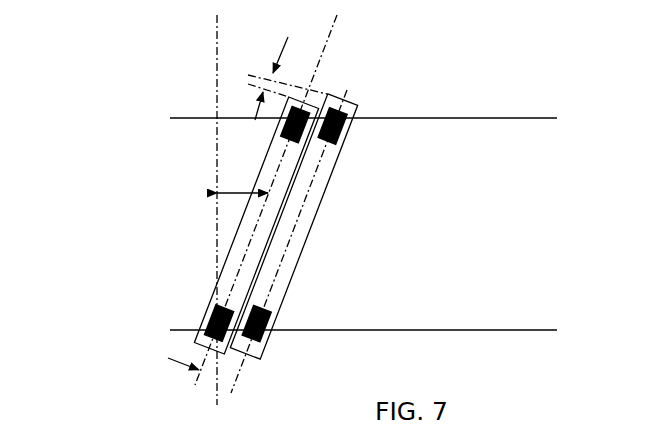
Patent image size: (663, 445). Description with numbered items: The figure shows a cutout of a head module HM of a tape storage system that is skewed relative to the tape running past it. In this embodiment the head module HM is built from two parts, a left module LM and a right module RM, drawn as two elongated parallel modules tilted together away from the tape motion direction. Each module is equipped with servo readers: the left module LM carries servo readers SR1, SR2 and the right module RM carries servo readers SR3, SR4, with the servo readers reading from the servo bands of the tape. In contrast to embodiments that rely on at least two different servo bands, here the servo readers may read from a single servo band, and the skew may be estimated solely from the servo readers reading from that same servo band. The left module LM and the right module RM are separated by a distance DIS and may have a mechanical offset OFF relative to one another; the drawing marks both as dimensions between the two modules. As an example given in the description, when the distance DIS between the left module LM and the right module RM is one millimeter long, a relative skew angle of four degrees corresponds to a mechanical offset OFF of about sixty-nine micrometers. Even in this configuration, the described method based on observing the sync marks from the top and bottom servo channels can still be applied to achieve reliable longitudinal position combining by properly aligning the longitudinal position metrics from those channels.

The head module HM is at (337, 82).
The left module LM is at (232, 247).
The right module RM is at (295, 267).
The servo reader SR1 is at (281, 137).
The servo reader SR2 is at (213, 307).
The servo reader SR3 is at (343, 124).
The servo reader SR4 is at (268, 322).
The mechanical offset OFF is at (274, 78).
The distance DIS is at (236, 385).